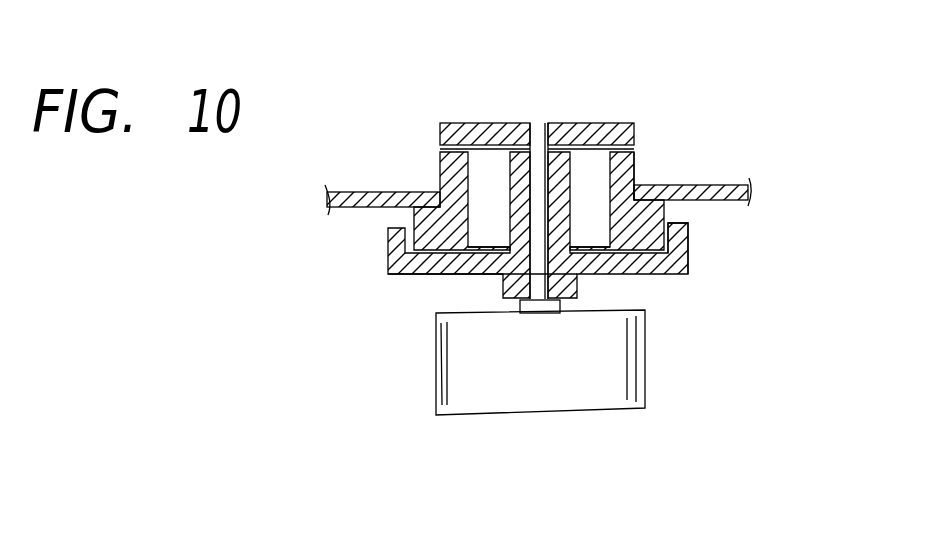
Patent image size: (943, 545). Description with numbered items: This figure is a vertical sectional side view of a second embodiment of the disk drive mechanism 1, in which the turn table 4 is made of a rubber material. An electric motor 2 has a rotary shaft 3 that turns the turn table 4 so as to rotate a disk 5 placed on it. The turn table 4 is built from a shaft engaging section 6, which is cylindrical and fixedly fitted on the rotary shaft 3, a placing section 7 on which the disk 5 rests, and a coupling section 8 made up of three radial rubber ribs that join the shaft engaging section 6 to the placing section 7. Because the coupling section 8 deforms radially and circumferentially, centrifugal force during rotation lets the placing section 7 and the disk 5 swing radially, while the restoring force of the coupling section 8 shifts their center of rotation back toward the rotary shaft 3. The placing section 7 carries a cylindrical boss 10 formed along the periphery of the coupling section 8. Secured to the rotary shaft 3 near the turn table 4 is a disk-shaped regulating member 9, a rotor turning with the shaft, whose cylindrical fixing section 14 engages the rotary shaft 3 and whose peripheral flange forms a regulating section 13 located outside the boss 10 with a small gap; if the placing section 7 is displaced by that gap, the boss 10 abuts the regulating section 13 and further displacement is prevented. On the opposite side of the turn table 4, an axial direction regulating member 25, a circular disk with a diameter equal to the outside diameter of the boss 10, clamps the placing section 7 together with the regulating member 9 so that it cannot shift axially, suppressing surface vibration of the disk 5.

The disk drive mechanism 1 is at (782, 93).
The electric motor 2 is at (607, 403).
The rotary shaft 3 is at (537, 132).
The turn table 4 is at (421, 165).
The disk 5 is at (350, 193).
The shaft engaging section 6 is at (572, 186).
The placing section 7 is at (657, 223).
The coupling section 8 is at (490, 157).
The regulating member 9 is at (661, 289).
The cylindrical boss 10 is at (632, 178).
The regulating section 13 is at (683, 232).
The cylindrical fixing section 14 is at (561, 279).
The axial direction regulating member 25 is at (466, 124).